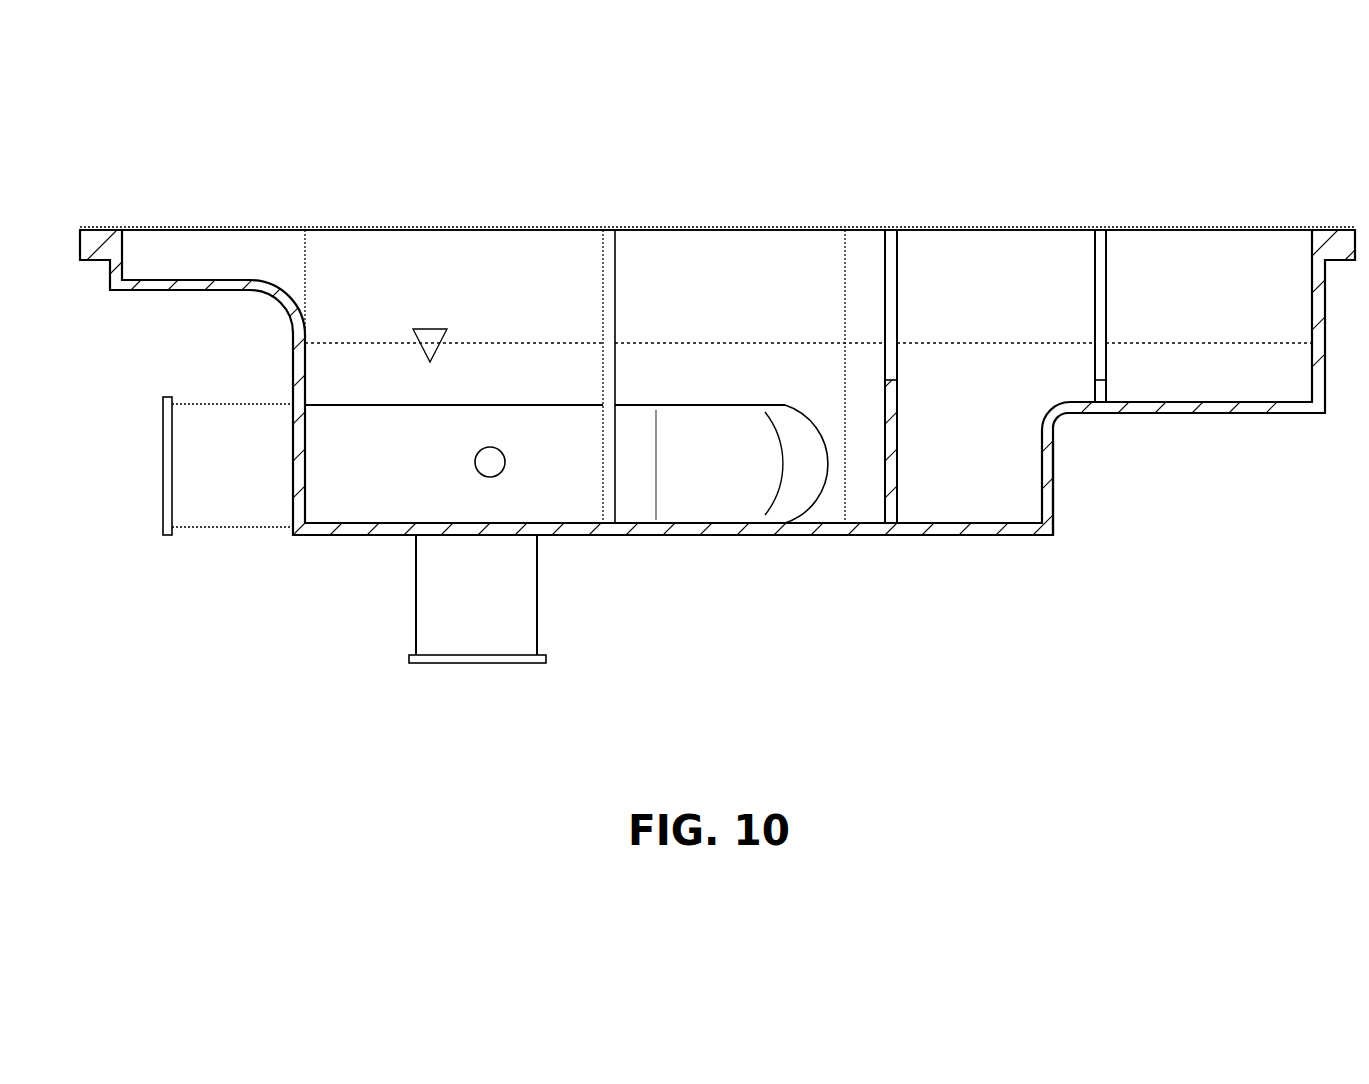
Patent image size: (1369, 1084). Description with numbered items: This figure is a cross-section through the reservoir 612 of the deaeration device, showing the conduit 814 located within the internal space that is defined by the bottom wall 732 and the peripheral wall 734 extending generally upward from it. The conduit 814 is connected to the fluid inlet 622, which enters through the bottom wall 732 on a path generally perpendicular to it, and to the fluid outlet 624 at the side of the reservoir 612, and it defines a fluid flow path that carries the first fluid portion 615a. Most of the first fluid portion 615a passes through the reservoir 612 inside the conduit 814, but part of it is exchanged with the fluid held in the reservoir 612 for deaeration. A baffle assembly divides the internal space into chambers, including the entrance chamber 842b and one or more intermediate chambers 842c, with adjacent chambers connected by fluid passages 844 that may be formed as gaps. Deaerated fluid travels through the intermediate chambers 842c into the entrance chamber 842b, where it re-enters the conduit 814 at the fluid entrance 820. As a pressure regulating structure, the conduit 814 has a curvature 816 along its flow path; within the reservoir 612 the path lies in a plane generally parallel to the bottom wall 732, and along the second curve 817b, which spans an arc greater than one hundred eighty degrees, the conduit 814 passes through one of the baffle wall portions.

The reservoir 612 is at (118, 190).
The fluid passages 844 is at (590, 258).
The entrance chamber 842b is at (454, 312).
The intermediate chambers 842c is at (963, 312).
The curvature 816 is at (533, 385).
The first fluid portion 615a is at (475, 732).
The conduit 814 is at (680, 405).
The second curve 817b is at (812, 420).
The fluid entrance 820 is at (482, 449).
The fluid outlet 624 is at (260, 403).
The fluid inlet 622 is at (538, 605).
The bottom wall 732 is at (1002, 536).
The peripheral wall 734 is at (1054, 468).